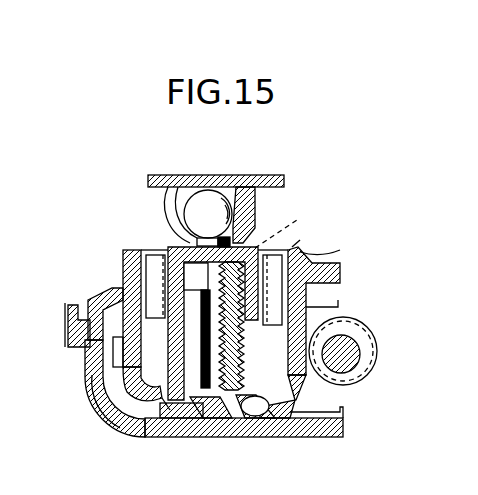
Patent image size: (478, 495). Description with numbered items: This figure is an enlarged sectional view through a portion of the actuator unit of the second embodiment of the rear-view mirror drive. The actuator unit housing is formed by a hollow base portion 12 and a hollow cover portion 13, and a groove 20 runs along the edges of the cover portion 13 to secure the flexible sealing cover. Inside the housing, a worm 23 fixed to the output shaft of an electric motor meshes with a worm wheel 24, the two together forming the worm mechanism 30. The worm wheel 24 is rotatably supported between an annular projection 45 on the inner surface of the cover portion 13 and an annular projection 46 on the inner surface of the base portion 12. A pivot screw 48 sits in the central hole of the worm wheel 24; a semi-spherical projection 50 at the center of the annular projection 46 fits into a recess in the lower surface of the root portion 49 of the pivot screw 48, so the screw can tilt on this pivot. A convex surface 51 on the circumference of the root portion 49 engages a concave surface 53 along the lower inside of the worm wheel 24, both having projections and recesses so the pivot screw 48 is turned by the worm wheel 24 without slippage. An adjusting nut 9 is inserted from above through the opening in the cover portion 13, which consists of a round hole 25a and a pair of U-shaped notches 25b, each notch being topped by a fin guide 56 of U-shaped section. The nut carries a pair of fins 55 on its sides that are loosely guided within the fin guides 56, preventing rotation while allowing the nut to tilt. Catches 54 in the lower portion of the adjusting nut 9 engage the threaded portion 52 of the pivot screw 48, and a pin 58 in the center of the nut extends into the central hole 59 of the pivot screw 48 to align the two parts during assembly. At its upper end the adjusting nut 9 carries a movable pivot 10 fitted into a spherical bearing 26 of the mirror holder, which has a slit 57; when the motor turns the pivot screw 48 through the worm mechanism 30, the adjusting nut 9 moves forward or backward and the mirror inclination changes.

The movable pivot 10 is at (206, 187).
The slit 57 is at (176, 201).
The adjusting nut 9 is at (189, 243).
The spherical bearing 26 is at (250, 212).
The pivot screw 48 is at (221, 291).
The threaded portion 52 is at (238, 353).
The fin 55 is at (143, 250).
The catch 54 is at (178, 366).
The annular projection 45 is at (306, 309).
The round hole 25a is at (296, 228).
The U-shaped notch 25b is at (316, 239).
The fin guide 56 is at (334, 247).
The worm mechanism 30 is at (353, 312).
The worm 23 is at (368, 331).
The groove 20 is at (80, 305).
The cover portion 13 is at (107, 290).
The base portion 12 is at (86, 365).
The worm wheel 24 is at (89, 385).
The concave surface 53 is at (276, 430).
The annular projection 46 is at (293, 402).
The convex surface 51 is at (253, 428).
The pin 58 is at (232, 428).
The semi-spherical projection 50 is at (207, 437).
The central hole 59 is at (178, 426).
The root portion 49 is at (162, 426).